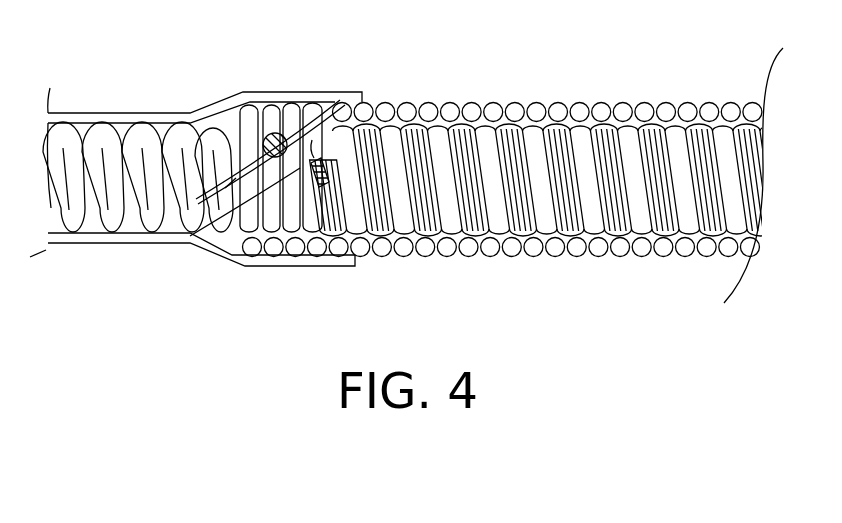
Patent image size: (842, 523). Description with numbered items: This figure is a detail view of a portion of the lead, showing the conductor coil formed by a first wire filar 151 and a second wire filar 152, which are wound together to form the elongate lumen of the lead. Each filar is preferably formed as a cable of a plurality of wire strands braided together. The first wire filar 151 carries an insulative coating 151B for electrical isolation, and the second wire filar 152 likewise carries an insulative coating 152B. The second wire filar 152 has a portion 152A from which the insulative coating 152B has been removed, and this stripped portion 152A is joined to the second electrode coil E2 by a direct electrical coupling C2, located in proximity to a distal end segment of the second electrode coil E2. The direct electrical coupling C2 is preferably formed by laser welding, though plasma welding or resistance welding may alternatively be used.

The first wire filar 151 is at (190, 116).
The insulative coating 151B is at (155, 150).
The second wire filar 152 is at (427, 228).
The portion of second wire filar 152A is at (215, 195).
The insulative coating 152B is at (318, 170).
The direct electrical coupling C2 is at (272, 130).
The second electrode coil E2 is at (430, 86).